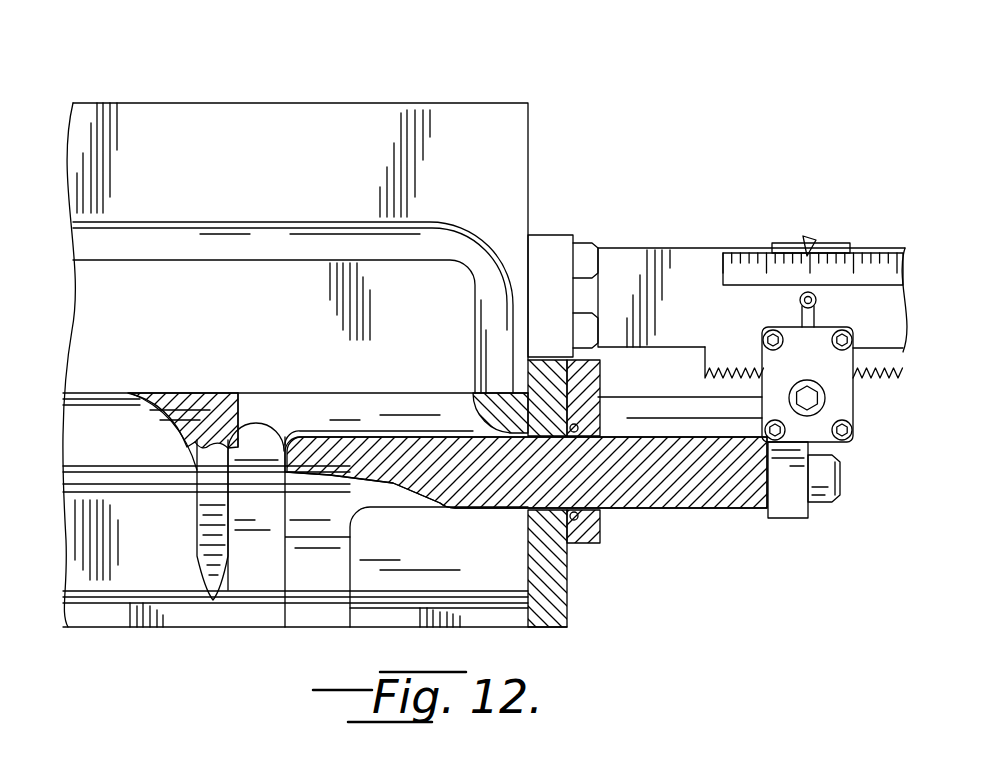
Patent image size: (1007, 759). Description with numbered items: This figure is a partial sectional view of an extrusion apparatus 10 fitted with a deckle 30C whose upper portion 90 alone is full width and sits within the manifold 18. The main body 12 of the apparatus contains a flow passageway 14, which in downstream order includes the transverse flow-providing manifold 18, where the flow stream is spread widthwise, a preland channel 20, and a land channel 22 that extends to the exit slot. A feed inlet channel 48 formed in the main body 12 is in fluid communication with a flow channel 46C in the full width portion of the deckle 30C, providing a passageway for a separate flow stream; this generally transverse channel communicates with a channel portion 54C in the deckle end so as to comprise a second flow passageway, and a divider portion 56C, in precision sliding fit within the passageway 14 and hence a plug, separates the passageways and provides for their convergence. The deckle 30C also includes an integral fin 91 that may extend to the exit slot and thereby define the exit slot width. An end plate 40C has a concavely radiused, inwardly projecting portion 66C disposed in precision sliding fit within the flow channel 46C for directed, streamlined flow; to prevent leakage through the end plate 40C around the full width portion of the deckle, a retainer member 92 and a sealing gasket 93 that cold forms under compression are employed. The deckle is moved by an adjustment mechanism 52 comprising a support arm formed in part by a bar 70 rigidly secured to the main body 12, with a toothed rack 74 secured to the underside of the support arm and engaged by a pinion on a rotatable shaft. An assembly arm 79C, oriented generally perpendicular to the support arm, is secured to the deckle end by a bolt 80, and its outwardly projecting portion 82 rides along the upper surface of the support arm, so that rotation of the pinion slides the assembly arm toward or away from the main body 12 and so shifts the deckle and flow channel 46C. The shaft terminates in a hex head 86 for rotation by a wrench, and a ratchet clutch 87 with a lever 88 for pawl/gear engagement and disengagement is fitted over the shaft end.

The extrusion apparatus 10 is at (584, 95).
The main body 12 is at (261, 102).
The flow passageway 14 is at (100, 415).
The manifold 18 is at (150, 447).
The preland channel 20 is at (165, 564).
The land channel 22 is at (192, 620).
The deckle 30C is at (197, 390).
The end plate 40C is at (572, 575).
The flow channel 46C is at (316, 410).
The feed inlet channel 48 is at (302, 240).
The adjustment mechanism 52 is at (832, 190).
The channel portion 54C is at (257, 445).
The divider portion 56C is at (202, 456).
The inwardly projecting portion 66C is at (500, 412).
The bar 70 is at (624, 248).
The toothed rack 74 is at (897, 380).
The assembly arm 79C is at (790, 520).
The bolt 80 is at (824, 503).
The outwardly projecting portion 82 is at (790, 243).
The hex head 86 is at (808, 396).
The ratchet clutch 87 is at (766, 328).
The lever 88 is at (816, 300).
The upper portion 90 is at (462, 492).
The integral fin 91 is at (340, 575).
The retainer member 92 is at (592, 395).
The sealing gasket 93 is at (592, 522).